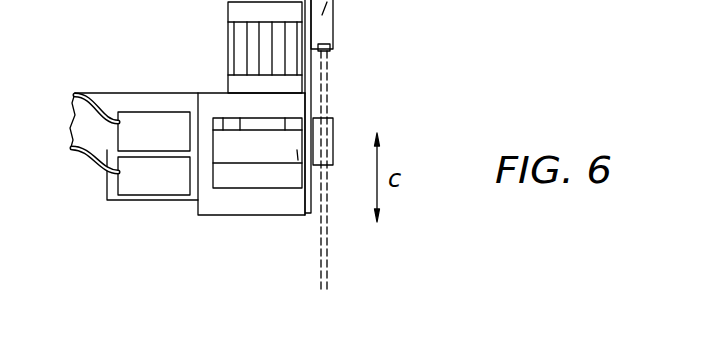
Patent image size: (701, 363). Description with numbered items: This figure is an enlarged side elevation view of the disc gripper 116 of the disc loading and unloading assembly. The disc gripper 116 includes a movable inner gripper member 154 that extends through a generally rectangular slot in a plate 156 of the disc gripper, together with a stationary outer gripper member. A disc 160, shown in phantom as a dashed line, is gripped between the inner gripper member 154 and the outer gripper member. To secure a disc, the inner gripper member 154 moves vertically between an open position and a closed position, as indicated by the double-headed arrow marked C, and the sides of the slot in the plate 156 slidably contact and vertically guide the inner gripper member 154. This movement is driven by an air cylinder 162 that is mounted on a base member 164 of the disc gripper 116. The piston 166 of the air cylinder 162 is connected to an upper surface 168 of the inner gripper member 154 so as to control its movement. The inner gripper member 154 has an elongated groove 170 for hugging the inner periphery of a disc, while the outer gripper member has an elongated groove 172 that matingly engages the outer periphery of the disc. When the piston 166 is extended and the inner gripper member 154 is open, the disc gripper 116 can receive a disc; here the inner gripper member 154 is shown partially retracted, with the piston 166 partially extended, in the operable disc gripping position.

The disc gripper 116 is at (342, 43).
The inner gripper member 154 is at (297, 155).
The plate 156 is at (308, 210).
The disc 160 is at (328, 273).
The air cylinder 162 is at (233, 13).
The base member 164 is at (265, 208).
The piston 166 is at (277, 125).
The upper surface 168 is at (210, 122).
The elongated groove 170 is at (325, 115).
The elongated groove 172 is at (328, 50).